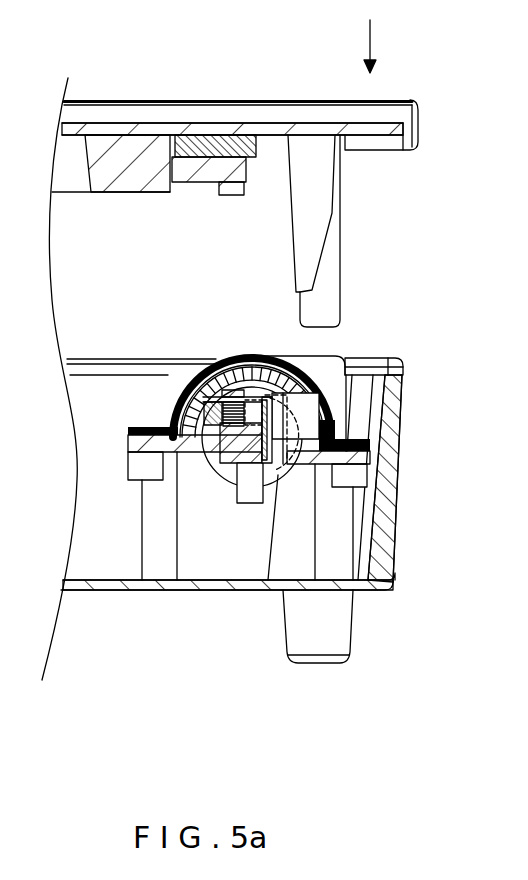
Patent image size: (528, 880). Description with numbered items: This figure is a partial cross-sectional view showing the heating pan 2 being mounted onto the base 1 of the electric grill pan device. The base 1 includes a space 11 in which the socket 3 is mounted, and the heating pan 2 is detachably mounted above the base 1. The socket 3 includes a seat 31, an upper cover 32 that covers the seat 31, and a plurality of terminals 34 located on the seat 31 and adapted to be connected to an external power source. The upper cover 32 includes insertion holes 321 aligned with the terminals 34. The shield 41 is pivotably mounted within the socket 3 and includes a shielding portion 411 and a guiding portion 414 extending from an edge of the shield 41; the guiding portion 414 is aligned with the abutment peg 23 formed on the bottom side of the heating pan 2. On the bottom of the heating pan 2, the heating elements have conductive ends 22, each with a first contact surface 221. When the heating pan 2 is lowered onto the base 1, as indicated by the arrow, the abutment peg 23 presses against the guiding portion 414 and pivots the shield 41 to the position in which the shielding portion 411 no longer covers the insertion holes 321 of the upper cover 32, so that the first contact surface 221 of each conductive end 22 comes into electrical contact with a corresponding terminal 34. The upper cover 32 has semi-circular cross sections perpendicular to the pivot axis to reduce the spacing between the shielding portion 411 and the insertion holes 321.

The base 1 is at (222, 388).
The space 11 is at (112, 557).
The heating pan 2 is at (259, 181).
The conductive end 22 is at (165, 200).
The first contact surface 221 is at (233, 199).
The abutment peg 23 is at (305, 250).
The socket 3 is at (264, 484).
The seat 31 is at (170, 445).
The upper cover 32 is at (207, 413).
The insertion hole 321 is at (205, 410).
The terminal 34 is at (250, 376).
The shield 41 is at (218, 388).
The shielding portion 411 is at (213, 366).
The guiding portion 414 is at (278, 413).